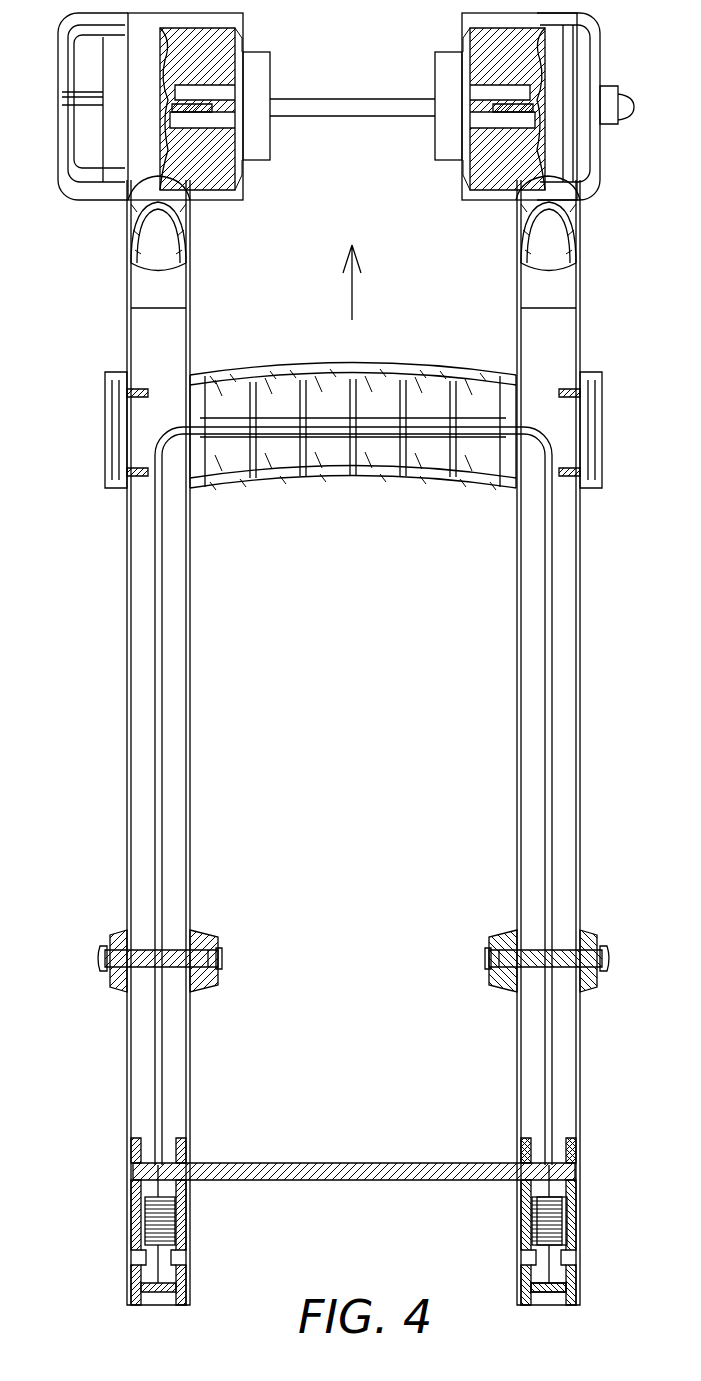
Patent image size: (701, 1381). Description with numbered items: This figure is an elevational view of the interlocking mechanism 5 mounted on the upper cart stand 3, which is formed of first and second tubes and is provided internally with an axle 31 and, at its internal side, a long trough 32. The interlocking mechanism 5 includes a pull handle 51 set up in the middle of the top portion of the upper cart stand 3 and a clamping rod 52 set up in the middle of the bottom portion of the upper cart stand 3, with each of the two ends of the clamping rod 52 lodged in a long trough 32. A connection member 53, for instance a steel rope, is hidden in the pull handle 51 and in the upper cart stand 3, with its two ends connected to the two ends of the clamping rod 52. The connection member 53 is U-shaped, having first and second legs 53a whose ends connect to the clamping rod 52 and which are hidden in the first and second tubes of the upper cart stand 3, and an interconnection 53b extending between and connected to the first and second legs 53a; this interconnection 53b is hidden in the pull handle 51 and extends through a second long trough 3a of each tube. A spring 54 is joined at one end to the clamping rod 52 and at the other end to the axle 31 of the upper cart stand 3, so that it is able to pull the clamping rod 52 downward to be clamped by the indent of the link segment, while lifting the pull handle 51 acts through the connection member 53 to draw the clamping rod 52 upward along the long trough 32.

The upper cart stand 3 is at (548, 331).
The second long trough 3a is at (612, 418).
The interlocking mechanism 5 is at (363, 804).
The axle 31 is at (580, 1288).
The long trough 32 is at (522, 1155).
The pull handle 51 is at (263, 368).
The clamping rod 52 is at (340, 1163).
The connection member 53 is at (355, 796).
The first and second legs 53a is at (615, 545).
The interconnection 53b is at (373, 433).
The spring 54 is at (568, 1212).